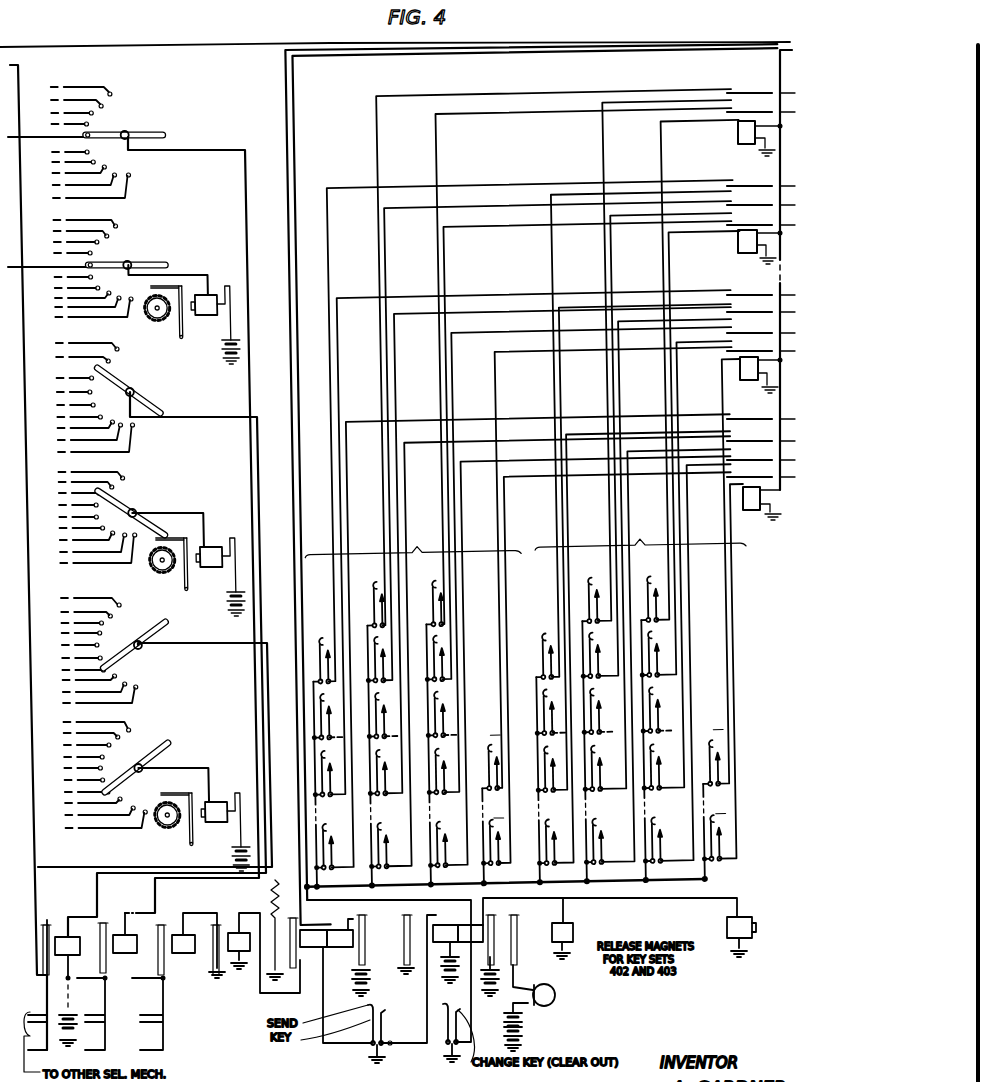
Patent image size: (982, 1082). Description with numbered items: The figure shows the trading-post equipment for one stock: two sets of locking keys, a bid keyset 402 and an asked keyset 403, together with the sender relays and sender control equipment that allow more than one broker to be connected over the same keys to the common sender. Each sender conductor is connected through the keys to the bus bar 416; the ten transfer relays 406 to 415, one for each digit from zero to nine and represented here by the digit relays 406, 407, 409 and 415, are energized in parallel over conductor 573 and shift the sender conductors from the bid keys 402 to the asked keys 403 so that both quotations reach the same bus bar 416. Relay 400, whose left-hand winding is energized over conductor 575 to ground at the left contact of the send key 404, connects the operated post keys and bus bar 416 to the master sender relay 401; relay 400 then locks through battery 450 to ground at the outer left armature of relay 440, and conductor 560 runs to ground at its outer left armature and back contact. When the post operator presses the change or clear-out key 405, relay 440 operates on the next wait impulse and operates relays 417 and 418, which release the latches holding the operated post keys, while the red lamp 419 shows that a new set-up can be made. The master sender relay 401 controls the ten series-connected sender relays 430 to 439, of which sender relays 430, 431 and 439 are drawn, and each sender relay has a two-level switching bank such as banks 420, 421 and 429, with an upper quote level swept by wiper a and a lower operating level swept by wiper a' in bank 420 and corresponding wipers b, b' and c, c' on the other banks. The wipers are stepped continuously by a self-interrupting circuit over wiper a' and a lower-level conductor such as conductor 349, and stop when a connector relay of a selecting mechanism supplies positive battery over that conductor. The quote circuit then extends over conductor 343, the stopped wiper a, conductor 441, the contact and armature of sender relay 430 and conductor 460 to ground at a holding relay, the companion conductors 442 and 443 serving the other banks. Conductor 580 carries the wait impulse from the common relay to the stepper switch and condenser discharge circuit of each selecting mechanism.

The conductor 580 is at (267, 44).
The conductor 460 is at (25, 82).
The conductor 560 is at (300, 99).
The conductor 575 is at (626, 58).
The conductor 573 is at (780, 63).
The conductor 343 is at (35, 139).
The conductor 349 is at (35, 267).
The switching bank 420 is at (146, 225).
The switching bank 421 is at (150, 479).
The switching bank 429 is at (155, 734).
The conductor 441 is at (246, 225).
The conductor 442 is at (246, 418).
The conductor 443 is at (182, 645).
The transfer relay 406 is at (738, 134).
The transfer relay 407 is at (738, 242).
The transfer relay 409 is at (740, 364).
The transfer relay 415 is at (752, 511).
The bid keyset 402 is at (521, 489).
The asked keyset 403 is at (637, 492).
The bus bar 416 is at (716, 886).
The sender relay 430 is at (62, 937).
The sender relay 431 is at (128, 935).
The sender relay 439 is at (183, 935).
The master sender relay 401 is at (239, 933).
The relay 400 is at (357, 979).
The battery 450 is at (372, 983).
The send key 404 is at (370, 1044).
The change key 405 is at (443, 1030).
The relay 440 is at (585, 947).
The relay 417 is at (573, 927).
The relay 418 is at (730, 917).
The red lamp 419 is at (555, 993).
The wiper a is at (124, 126).
The wiper a' is at (125, 218).
The switch blade b is at (128, 384).
The switch blade b' is at (130, 468).
The switch blade c is at (134, 645).
The switch blade c' is at (135, 731).